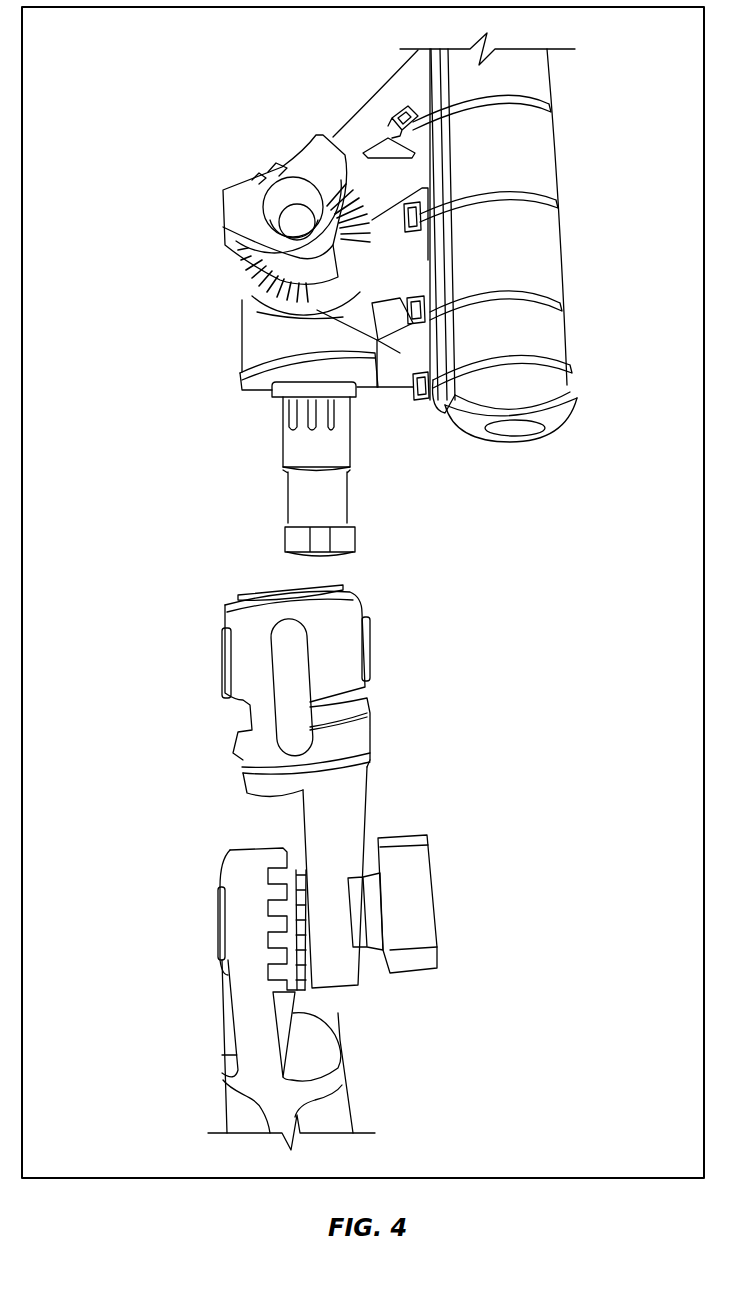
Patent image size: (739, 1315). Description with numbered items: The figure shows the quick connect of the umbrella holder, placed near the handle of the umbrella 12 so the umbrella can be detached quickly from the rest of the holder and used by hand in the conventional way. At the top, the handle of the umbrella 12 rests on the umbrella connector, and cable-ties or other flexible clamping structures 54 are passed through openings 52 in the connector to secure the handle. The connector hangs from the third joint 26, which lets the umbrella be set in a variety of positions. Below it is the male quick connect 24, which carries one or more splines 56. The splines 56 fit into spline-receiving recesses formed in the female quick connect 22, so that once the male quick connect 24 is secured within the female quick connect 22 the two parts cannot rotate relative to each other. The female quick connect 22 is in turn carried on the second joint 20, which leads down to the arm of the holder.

The umbrella 12 is at (540, 82).
The flexible clamping structures 54 is at (543, 200).
The third joint 26 is at (190, 269).
The openings 52 is at (417, 337).
The splines 56 is at (280, 428).
The male quick connect 24 is at (345, 523).
The female quick connect 22 is at (350, 643).
The second joint 20 is at (456, 853).